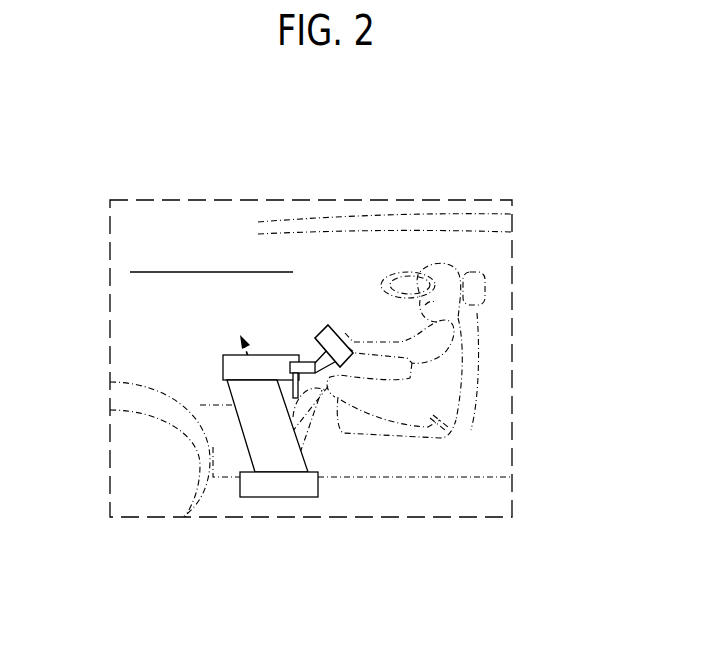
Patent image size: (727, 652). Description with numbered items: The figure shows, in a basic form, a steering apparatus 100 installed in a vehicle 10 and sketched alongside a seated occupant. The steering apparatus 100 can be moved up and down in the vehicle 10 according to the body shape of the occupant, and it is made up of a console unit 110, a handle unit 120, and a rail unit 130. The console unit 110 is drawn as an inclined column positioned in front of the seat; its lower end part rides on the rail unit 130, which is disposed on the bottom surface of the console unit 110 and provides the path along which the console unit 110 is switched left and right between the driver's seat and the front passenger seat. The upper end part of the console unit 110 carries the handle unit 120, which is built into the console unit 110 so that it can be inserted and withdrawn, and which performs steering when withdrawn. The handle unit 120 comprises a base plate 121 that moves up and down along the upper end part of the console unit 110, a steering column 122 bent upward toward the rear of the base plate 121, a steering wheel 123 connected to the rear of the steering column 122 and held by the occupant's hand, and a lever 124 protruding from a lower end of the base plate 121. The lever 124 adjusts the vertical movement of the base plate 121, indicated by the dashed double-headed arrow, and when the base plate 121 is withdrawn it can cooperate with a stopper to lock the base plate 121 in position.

The steering apparatus 100 is at (342, 102).
The vehicle 10 is at (503, 252).
The console unit 110 is at (240, 423).
The handle unit 120 is at (274, 329).
The base plate 121 is at (240, 372).
The steering column 122 is at (313, 362).
The steering wheel 123 is at (334, 328).
The lever 124 is at (310, 373).
The rail unit 130 is at (289, 496).